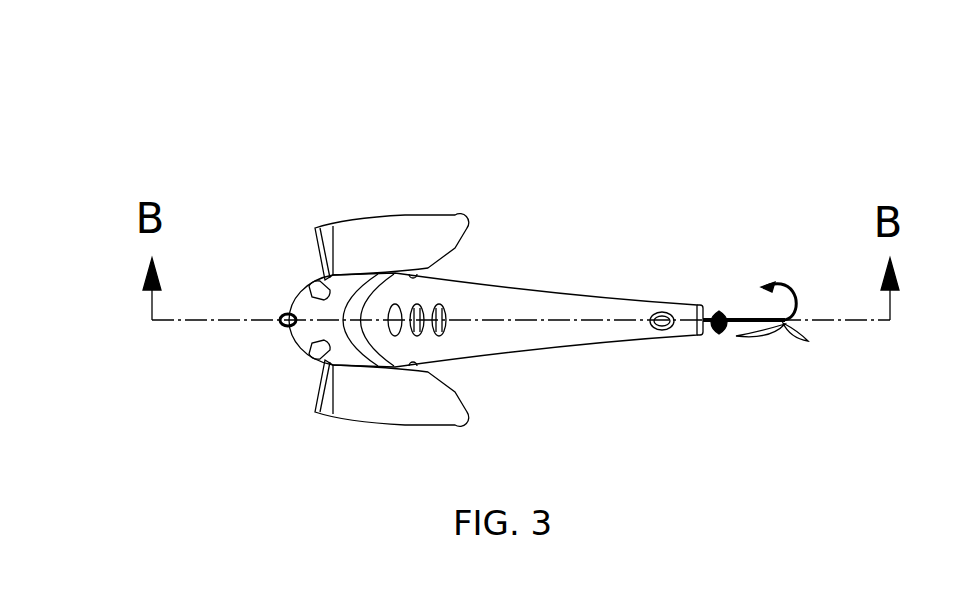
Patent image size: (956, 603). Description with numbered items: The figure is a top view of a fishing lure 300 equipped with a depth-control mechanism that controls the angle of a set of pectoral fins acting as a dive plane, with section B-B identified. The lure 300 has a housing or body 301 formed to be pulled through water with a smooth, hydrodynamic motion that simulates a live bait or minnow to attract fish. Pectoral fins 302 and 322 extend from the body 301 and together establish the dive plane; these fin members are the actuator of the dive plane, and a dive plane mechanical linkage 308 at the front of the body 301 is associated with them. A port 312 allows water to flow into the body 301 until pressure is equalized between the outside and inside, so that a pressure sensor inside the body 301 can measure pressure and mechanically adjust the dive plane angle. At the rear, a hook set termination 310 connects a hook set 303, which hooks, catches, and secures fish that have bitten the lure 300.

The lure 300 is at (458, 122).
The body 301 is at (527, 283).
The pectoral fin 302 is at (377, 408).
The pectoral fin 322 is at (342, 220).
The dive plane mechanical linkage 308 is at (286, 316).
The port 312 is at (422, 300).
The hook set termination 310 is at (719, 311).
The hook set 303 is at (768, 285).